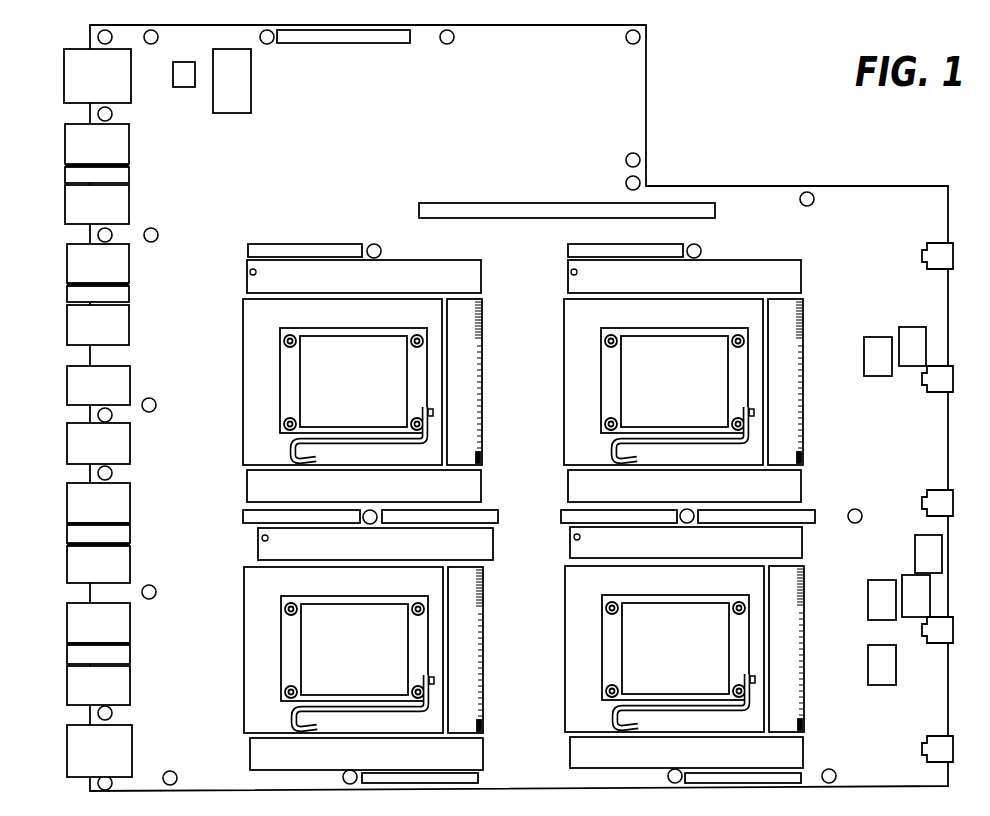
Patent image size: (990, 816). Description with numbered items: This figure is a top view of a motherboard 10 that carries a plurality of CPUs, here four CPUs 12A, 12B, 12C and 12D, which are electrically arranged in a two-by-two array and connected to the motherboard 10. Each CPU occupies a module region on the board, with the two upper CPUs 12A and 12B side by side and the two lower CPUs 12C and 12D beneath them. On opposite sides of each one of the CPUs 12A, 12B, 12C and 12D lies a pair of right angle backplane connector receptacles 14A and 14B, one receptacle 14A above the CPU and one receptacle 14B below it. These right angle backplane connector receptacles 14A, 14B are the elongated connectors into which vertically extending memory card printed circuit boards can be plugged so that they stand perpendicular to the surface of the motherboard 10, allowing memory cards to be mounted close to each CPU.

The motherboard 10 is at (512, 136).
The CPU 12A is at (331, 397).
The CPU 12B is at (653, 397).
The CPU 12C is at (332, 657).
The CPU 12D is at (653, 657).
The right angle backplane connector receptacle 14A is at (234, 272).
The right angle backplane connector receptacle 14B is at (234, 483).